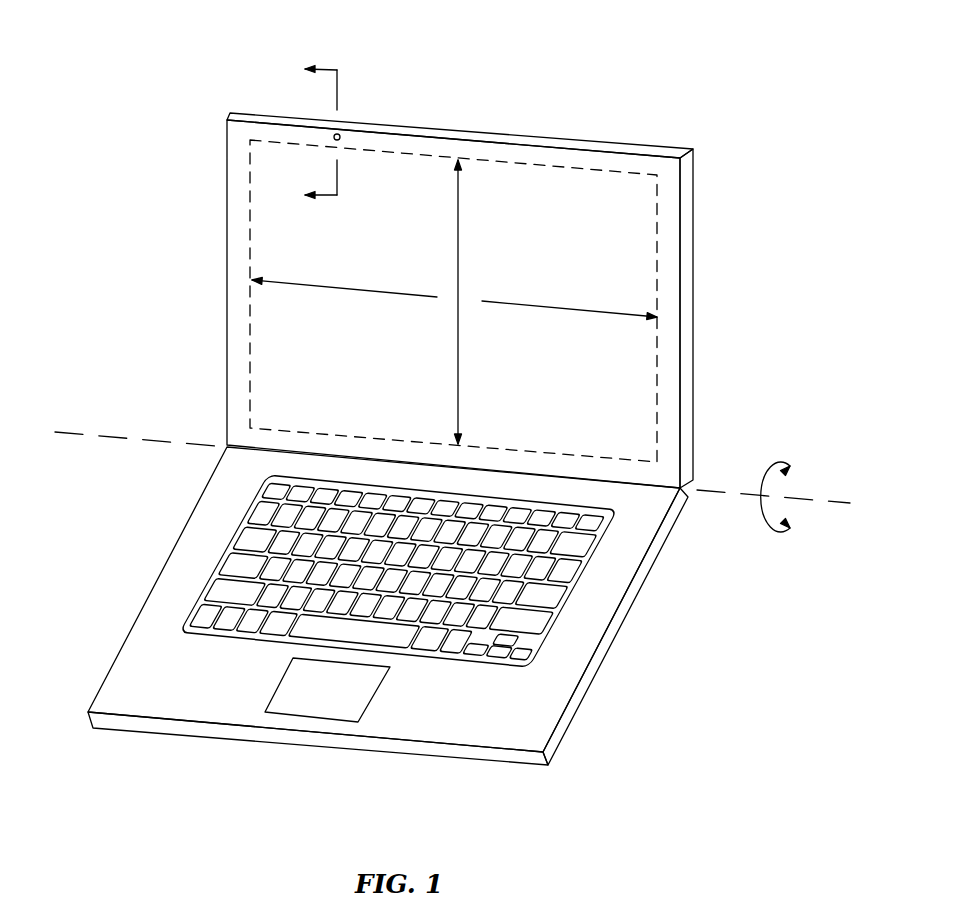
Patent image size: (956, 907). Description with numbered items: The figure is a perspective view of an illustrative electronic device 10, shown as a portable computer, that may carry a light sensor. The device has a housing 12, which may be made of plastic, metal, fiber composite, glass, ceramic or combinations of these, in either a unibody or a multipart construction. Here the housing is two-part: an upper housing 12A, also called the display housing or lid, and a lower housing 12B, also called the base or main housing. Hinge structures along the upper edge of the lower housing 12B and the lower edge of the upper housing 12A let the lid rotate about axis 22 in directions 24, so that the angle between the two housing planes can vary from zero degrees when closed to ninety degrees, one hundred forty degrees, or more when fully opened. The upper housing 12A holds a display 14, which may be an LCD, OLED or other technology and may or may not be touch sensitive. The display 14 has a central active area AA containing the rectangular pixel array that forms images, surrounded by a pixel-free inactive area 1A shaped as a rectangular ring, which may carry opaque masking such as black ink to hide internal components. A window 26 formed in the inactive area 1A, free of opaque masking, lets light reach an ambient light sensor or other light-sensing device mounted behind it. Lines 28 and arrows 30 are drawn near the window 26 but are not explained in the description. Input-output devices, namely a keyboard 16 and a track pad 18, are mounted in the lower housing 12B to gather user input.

The electronic device 10 is at (750, 116).
The housing 12 is at (693, 420).
The upper housing 12A is at (212, 118).
The lower housing 12B is at (368, 622).
The display 14 is at (556, 194).
The keyboard 16 is at (568, 597).
The track pad 18 is at (337, 722).
The axis 22 is at (72, 432).
The directions 24 is at (777, 532).
The window 26 is at (342, 135).
The reference line 28 is at (336, 88).
The lateral direction arrow 30 is at (326, 66).
The inactive area 1A is at (465, 148).
The active area AA is at (454, 302).